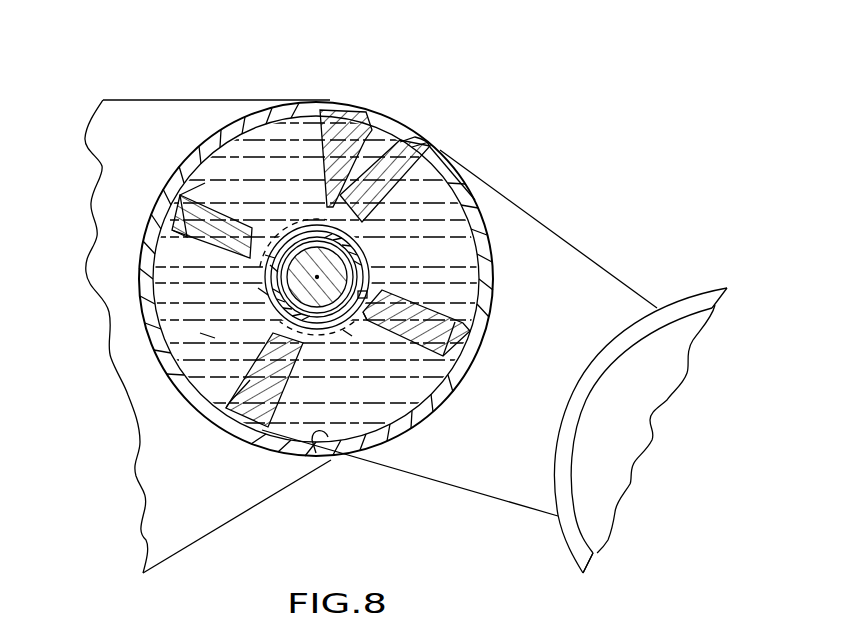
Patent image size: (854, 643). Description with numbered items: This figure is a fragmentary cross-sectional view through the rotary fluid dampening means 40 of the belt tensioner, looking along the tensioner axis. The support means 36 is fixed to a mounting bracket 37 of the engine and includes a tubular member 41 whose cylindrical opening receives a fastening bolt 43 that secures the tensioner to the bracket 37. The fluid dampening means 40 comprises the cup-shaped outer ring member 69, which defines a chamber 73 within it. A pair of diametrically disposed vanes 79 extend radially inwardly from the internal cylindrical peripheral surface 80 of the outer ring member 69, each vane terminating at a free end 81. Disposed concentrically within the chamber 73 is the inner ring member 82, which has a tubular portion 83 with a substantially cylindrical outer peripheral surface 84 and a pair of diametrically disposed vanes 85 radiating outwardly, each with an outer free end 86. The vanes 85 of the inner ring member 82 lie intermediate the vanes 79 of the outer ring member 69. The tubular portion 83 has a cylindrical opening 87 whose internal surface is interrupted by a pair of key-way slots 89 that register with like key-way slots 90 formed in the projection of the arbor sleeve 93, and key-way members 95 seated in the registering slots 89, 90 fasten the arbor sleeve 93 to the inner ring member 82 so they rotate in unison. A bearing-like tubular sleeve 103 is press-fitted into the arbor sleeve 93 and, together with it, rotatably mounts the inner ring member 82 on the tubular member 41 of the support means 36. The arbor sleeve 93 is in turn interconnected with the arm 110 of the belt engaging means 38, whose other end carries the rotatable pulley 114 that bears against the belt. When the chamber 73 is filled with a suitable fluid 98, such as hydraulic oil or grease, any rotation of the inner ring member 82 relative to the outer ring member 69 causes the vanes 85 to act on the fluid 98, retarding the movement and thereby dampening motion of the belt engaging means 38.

The support means 36 is at (317, 325).
The mounting bracket 37 is at (147, 533).
The belt engaging means 38 is at (692, 272).
The fluid dampening means 40 is at (443, 203).
The tubular member 41 is at (365, 262).
The fastening bolt 43 is at (307, 257).
The outer ring member 69 is at (330, 101).
The chamber 73 is at (200, 333).
The vanes 79 is at (436, 197).
The internal cylindrical peripheral surface 80 is at (328, 437).
The free ends 81 is at (367, 222).
The inner ring member 82 is at (350, 332).
The tubular portion 83 is at (363, 265).
The outer peripheral surface 84 is at (297, 225).
The vanes 85 is at (187, 237).
The outer free end 86 is at (180, 195).
The cylindrical opening 87 is at (345, 271).
The key-way slots 89 is at (262, 257).
The key-way slots 90 is at (273, 267).
The arbor sleeve 93 is at (262, 291).
The key-way members 95 is at (262, 243).
The fluid 98 is at (243, 150).
The bearing-like tubular sleeve 103 is at (367, 317).
The arm 110 is at (588, 267).
The pulley 114 is at (567, 540).